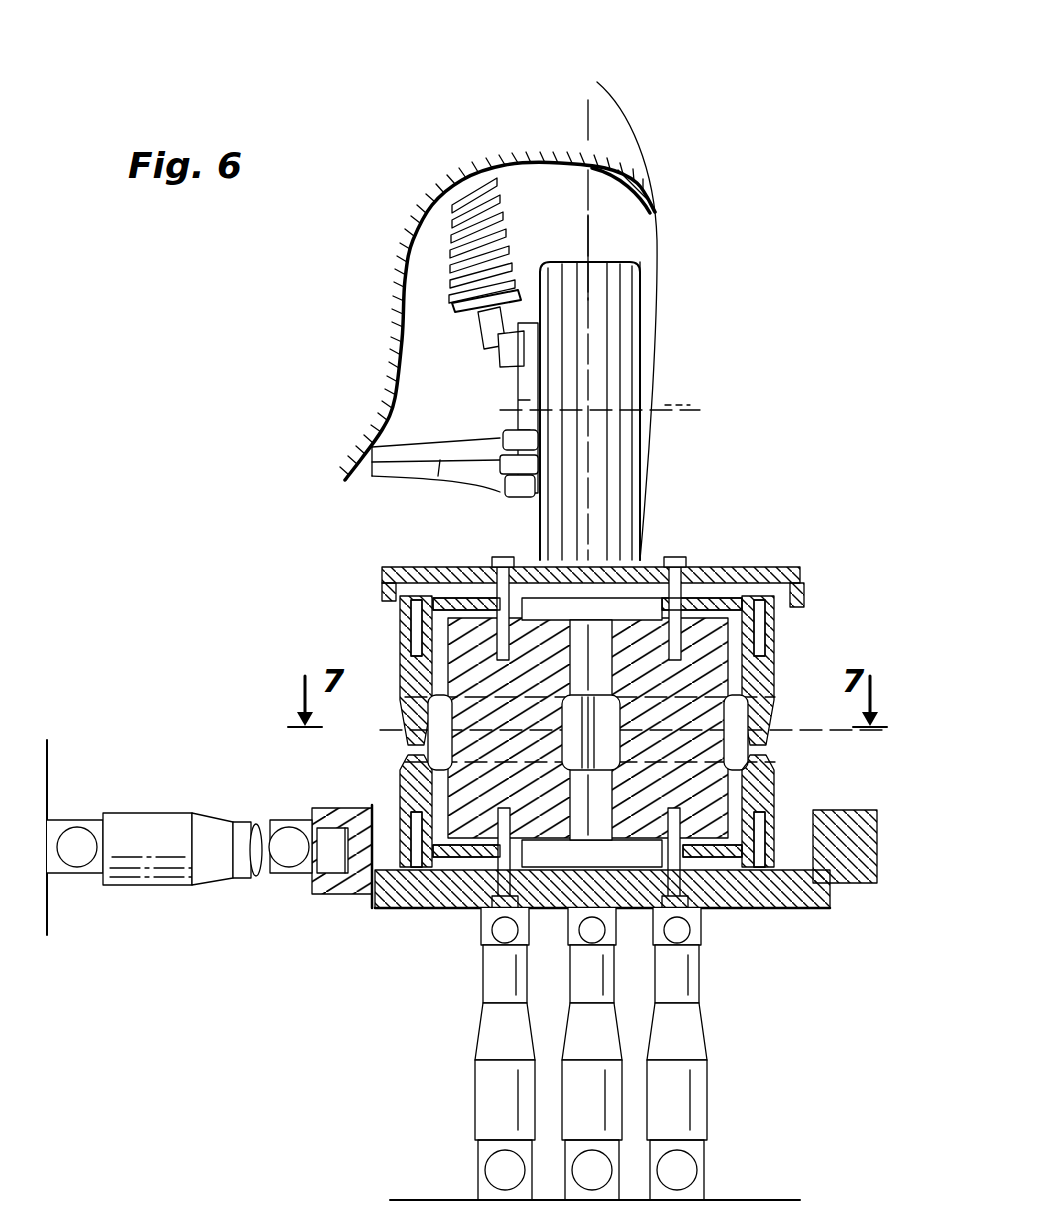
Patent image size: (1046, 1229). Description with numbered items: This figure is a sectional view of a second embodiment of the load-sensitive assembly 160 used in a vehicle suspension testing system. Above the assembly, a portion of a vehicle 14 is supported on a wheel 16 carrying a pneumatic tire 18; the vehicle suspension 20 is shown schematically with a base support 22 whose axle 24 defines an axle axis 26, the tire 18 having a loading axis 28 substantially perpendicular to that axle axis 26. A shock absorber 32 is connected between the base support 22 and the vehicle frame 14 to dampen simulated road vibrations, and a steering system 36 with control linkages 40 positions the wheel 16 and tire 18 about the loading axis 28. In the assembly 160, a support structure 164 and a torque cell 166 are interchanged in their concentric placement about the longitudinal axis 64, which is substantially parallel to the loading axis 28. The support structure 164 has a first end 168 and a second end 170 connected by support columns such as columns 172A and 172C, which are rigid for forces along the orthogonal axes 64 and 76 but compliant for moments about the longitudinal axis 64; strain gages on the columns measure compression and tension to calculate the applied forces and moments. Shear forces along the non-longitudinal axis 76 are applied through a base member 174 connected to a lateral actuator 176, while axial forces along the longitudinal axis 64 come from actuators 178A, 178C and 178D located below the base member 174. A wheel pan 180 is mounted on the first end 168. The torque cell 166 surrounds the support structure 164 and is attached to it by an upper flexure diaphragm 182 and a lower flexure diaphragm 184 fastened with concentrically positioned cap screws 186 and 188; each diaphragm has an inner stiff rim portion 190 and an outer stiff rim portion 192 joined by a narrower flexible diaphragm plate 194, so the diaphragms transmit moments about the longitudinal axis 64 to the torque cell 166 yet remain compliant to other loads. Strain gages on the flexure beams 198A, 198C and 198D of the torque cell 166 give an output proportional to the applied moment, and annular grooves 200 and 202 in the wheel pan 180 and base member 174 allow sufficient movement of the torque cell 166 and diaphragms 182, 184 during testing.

The vehicle 14 is at (630, 76).
The wheel 16 is at (656, 363).
The pneumatic tire 18 is at (642, 450).
The vehicle suspension 20 is at (545, 218).
The base support 22 is at (518, 365).
The axle 24 is at (500, 410).
The axle axis 26 is at (672, 405).
The loading axis 28 is at (590, 143).
The shock absorber 32 is at (458, 280).
The steering system 36 is at (380, 488).
The control linkages 40 is at (438, 462).
The longitudinal axis 64 is at (590, 930).
The non-longitudinal orthogonal axis 76 is at (800, 735).
The load-sensitive assembly 160 is at (824, 640).
The support structure 164 is at (450, 655).
The torque cell 166 is at (778, 766).
The first end 168 is at (776, 668).
The second end 170 is at (738, 805).
The support column 172A is at (430, 740).
The support column 172C is at (762, 720).
The base member 174 is at (822, 908).
The lateral actuator 176 is at (142, 812).
The actuator 178A is at (480, 1115).
The actuator 178C is at (708, 1088).
The actuator 178D is at (600, 1068).
The wheel pan 180 is at (803, 572).
The upper flexure diaphragm 182 is at (400, 610).
The lower flexure diaphragm 184 is at (380, 808).
The cap screws 186 is at (503, 566).
The cap screws 188 is at (500, 910).
The inner stiff rim portion 190 is at (660, 852).
The outer stiff rim portion 192 is at (392, 598).
The flexible diaphragm plate 194 is at (410, 580).
The flexure beam 198A is at (408, 718).
The flexure beam 198C is at (760, 745).
The flexure beam 198D is at (622, 695).
The annular groove 200 is at (436, 578).
The annular groove 202 is at (388, 902).